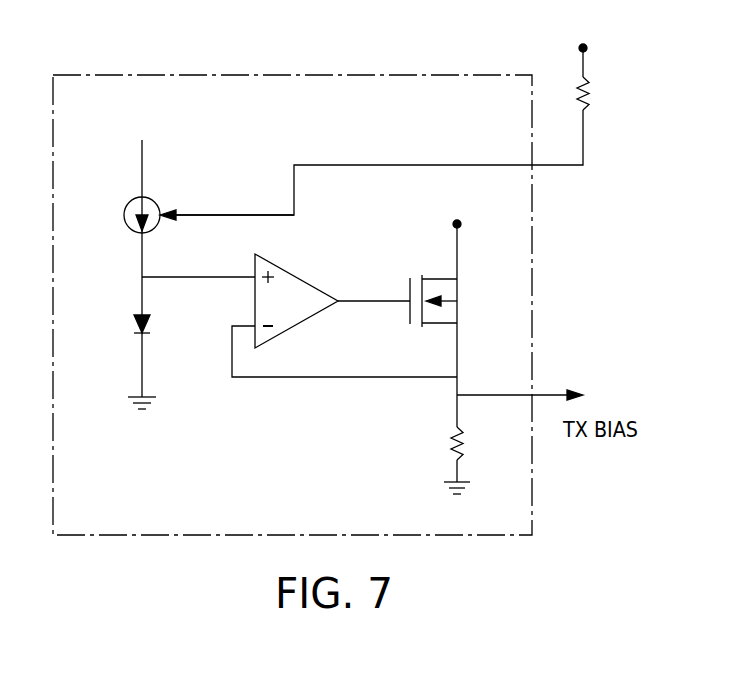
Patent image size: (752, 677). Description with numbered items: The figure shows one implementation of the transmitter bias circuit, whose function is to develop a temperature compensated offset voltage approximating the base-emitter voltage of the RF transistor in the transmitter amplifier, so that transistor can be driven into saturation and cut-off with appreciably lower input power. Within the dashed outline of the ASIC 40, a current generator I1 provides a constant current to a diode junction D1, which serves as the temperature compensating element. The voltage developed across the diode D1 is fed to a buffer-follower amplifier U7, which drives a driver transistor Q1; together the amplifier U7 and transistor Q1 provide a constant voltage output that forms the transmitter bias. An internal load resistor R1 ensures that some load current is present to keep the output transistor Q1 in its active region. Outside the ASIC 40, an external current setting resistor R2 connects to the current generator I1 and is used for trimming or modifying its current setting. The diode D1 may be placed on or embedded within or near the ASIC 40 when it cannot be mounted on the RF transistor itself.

The ASIC 40 is at (532, 268).
The current generator I1 is at (208, 193).
The diode junction D1 is at (155, 343).
The buffer-follower amplifier U7 is at (299, 315).
The driver transistor Q1 is at (450, 294).
The internal load resistor R1 is at (443, 444).
The external current setting resistor R2 is at (398, 118).